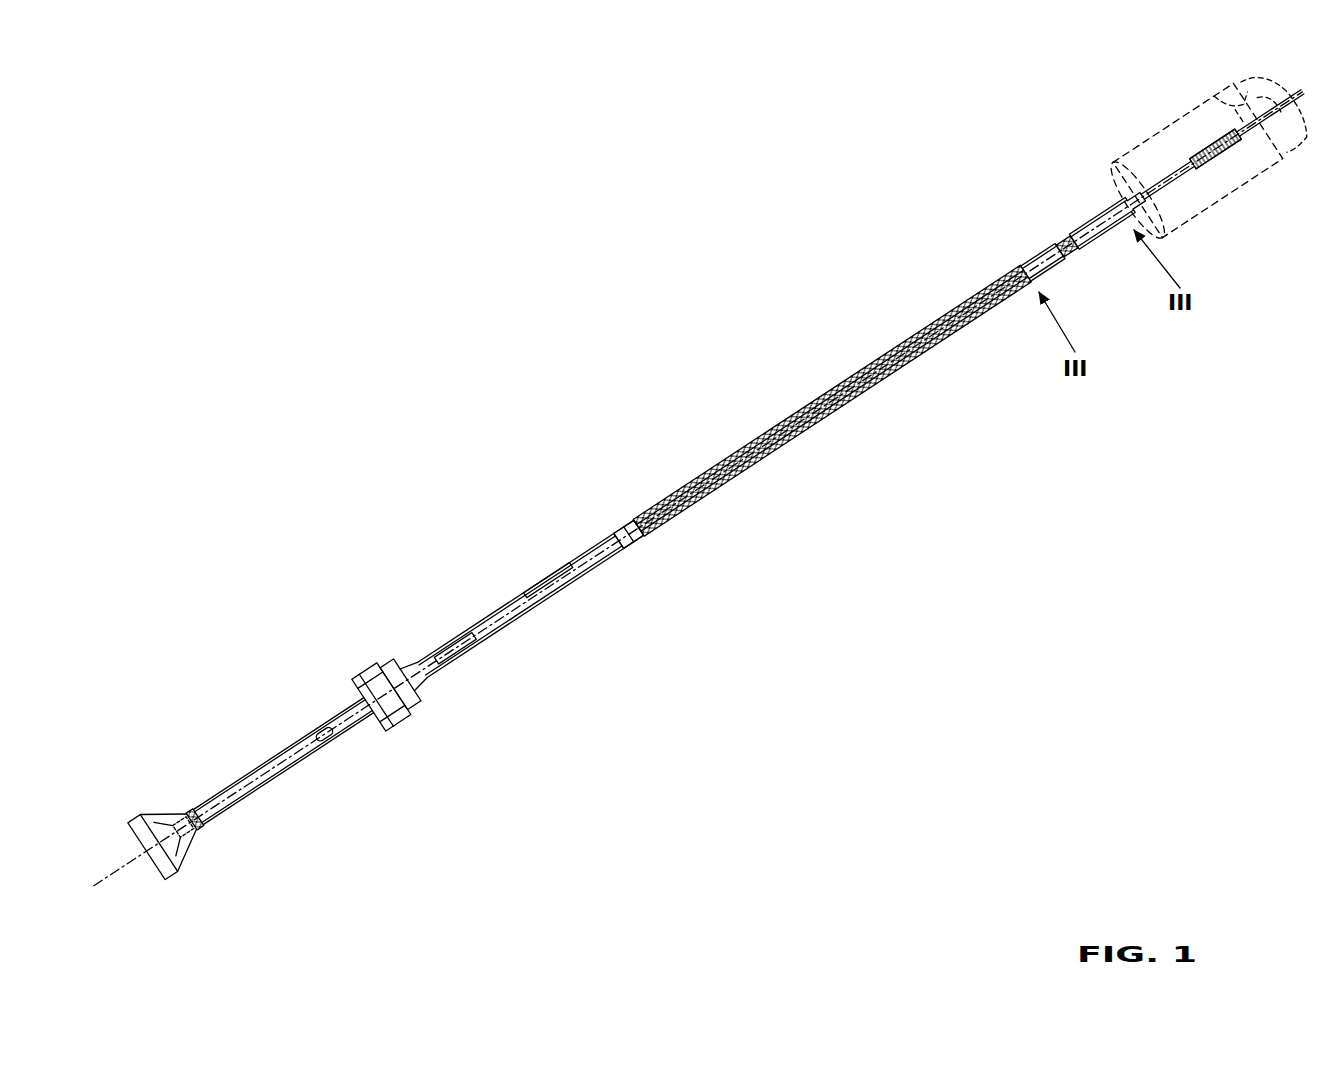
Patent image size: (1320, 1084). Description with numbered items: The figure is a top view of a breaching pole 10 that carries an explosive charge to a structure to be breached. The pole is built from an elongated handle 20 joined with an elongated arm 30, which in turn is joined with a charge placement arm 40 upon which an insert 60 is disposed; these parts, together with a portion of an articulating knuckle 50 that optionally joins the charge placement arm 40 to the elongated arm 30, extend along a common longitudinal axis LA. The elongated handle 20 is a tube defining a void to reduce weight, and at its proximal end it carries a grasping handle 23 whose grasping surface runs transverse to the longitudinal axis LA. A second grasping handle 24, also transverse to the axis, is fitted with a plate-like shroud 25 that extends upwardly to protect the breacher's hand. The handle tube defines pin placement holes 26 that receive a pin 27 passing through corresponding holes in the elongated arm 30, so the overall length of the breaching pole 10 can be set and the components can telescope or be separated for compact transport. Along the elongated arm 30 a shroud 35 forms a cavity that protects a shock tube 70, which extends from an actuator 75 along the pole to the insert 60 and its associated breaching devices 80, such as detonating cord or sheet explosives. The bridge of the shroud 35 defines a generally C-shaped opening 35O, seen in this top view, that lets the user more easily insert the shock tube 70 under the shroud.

The breaching pole 10 is at (422, 560).
The elongated handle 20 is at (292, 792).
The grasping handle 23 is at (143, 822).
The second grasping handle 24 is at (363, 676).
The shroud 25 is at (395, 661).
The pin placement holes 26 is at (573, 567).
The pin 27 is at (537, 597).
The elongated arm 30 is at (632, 565).
The shroud 35 is at (700, 480).
The opening 35O is at (628, 535).
The charge placement arm 40 is at (1090, 205).
The articulating knuckle 50 is at (1066, 260).
The insert 60 is at (1178, 128).
The shock tube 70 is at (322, 730).
The actuator 75 is at (178, 812).
The breaching devices 80 is at (1283, 102).
The longitudinal axis LA is at (116, 876).